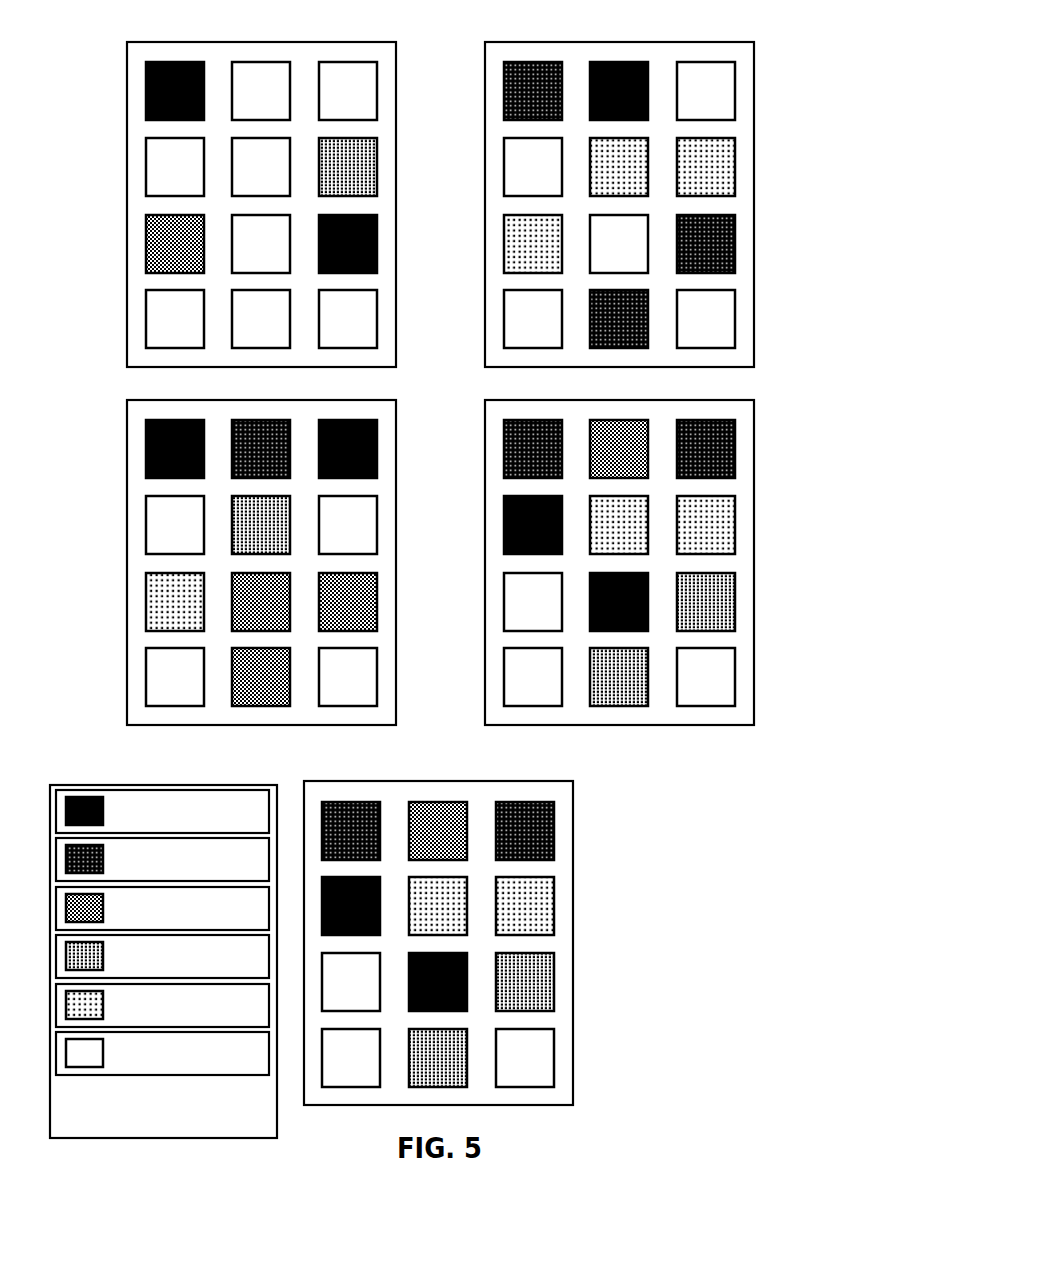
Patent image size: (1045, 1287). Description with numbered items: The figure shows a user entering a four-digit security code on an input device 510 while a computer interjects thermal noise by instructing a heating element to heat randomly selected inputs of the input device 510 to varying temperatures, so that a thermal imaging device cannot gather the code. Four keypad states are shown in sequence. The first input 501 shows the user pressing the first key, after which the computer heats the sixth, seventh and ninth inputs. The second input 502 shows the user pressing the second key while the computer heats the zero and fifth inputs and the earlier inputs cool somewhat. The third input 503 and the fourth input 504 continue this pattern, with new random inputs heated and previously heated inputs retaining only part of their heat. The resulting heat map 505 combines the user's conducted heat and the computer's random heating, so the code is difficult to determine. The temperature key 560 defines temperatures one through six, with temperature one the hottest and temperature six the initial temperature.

The first input 501 is at (147, 76).
The second input 502 is at (650, 67).
The third input 503 is at (311, 429).
The fourth input 504 is at (503, 511).
The heat map 505 is at (565, 943).
The input device 510 is at (442, 370).
The temperature key 560 is at (203, 1132).